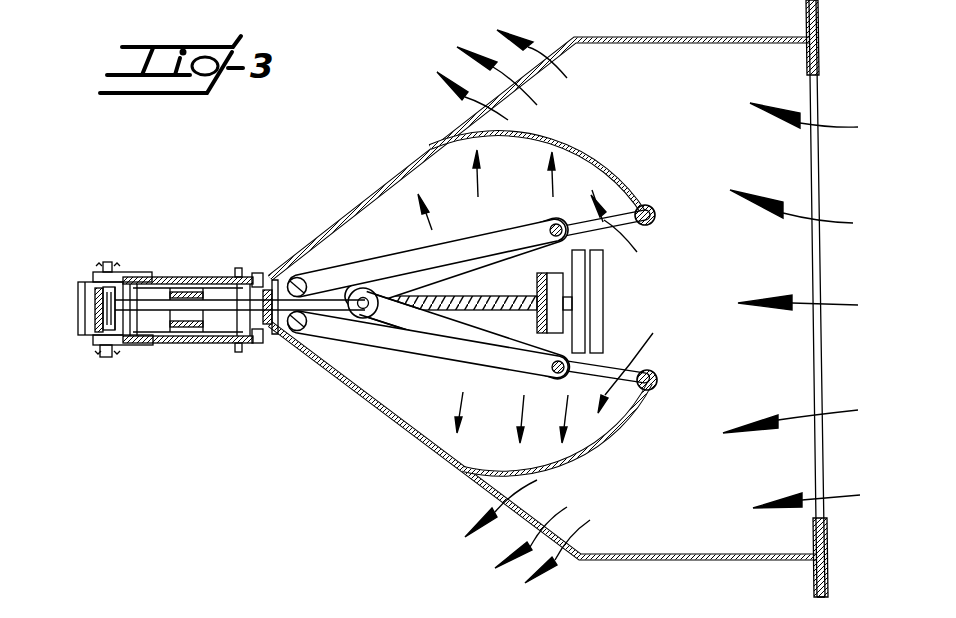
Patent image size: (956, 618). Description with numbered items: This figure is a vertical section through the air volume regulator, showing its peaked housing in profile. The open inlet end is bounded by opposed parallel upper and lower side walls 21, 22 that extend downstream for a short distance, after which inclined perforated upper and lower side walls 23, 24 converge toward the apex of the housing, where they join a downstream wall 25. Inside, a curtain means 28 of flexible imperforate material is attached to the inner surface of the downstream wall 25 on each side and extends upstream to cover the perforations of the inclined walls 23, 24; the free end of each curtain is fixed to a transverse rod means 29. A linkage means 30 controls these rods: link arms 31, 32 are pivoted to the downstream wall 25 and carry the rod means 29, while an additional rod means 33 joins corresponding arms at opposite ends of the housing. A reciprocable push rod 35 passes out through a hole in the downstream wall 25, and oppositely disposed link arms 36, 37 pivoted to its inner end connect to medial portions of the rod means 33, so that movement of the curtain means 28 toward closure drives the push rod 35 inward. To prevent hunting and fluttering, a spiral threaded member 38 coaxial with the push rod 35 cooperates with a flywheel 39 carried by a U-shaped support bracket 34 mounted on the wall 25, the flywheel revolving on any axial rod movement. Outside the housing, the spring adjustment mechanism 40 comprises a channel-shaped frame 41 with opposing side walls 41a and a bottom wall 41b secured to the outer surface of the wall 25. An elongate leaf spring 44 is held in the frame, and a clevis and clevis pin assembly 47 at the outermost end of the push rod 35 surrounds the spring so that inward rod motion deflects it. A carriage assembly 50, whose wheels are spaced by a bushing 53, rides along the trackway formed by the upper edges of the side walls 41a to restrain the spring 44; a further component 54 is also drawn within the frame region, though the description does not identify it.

The upper side wall 21 is at (726, 36).
The lower side wall 22 is at (734, 562).
The inclined perforated upper side wall 23 is at (353, 207).
The inclined perforated lower side wall 24 is at (420, 443).
The downstream wall 25 is at (818, 584).
The curtain means 28 is at (588, 150).
The rod means 29 is at (657, 215).
The linkage means 30 is at (421, 263).
The link arm 31 is at (474, 213).
The link arm 32 is at (377, 338).
The additional rod means 33 is at (429, 297).
The support bracket 34 is at (524, 332).
The push rod 35 is at (296, 358).
The link arm 36 is at (462, 285).
The link arm 37 is at (452, 339).
The spiral threaded member 38 is at (488, 293).
The flywheel 39 is at (594, 295).
The spring adjustment mechanism 40 is at (197, 302).
The channel-shaped frame 41 is at (217, 270).
The side walls 41a is at (201, 277).
The bottom wall 41b is at (218, 345).
The leaf spring 44 is at (95, 305).
The clevis and clevis pin assembly 47 is at (103, 320).
The carriage assembly 50 is at (93, 281).
The bushing 53 is at (80, 297).
The piston 54 is at (167, 328).